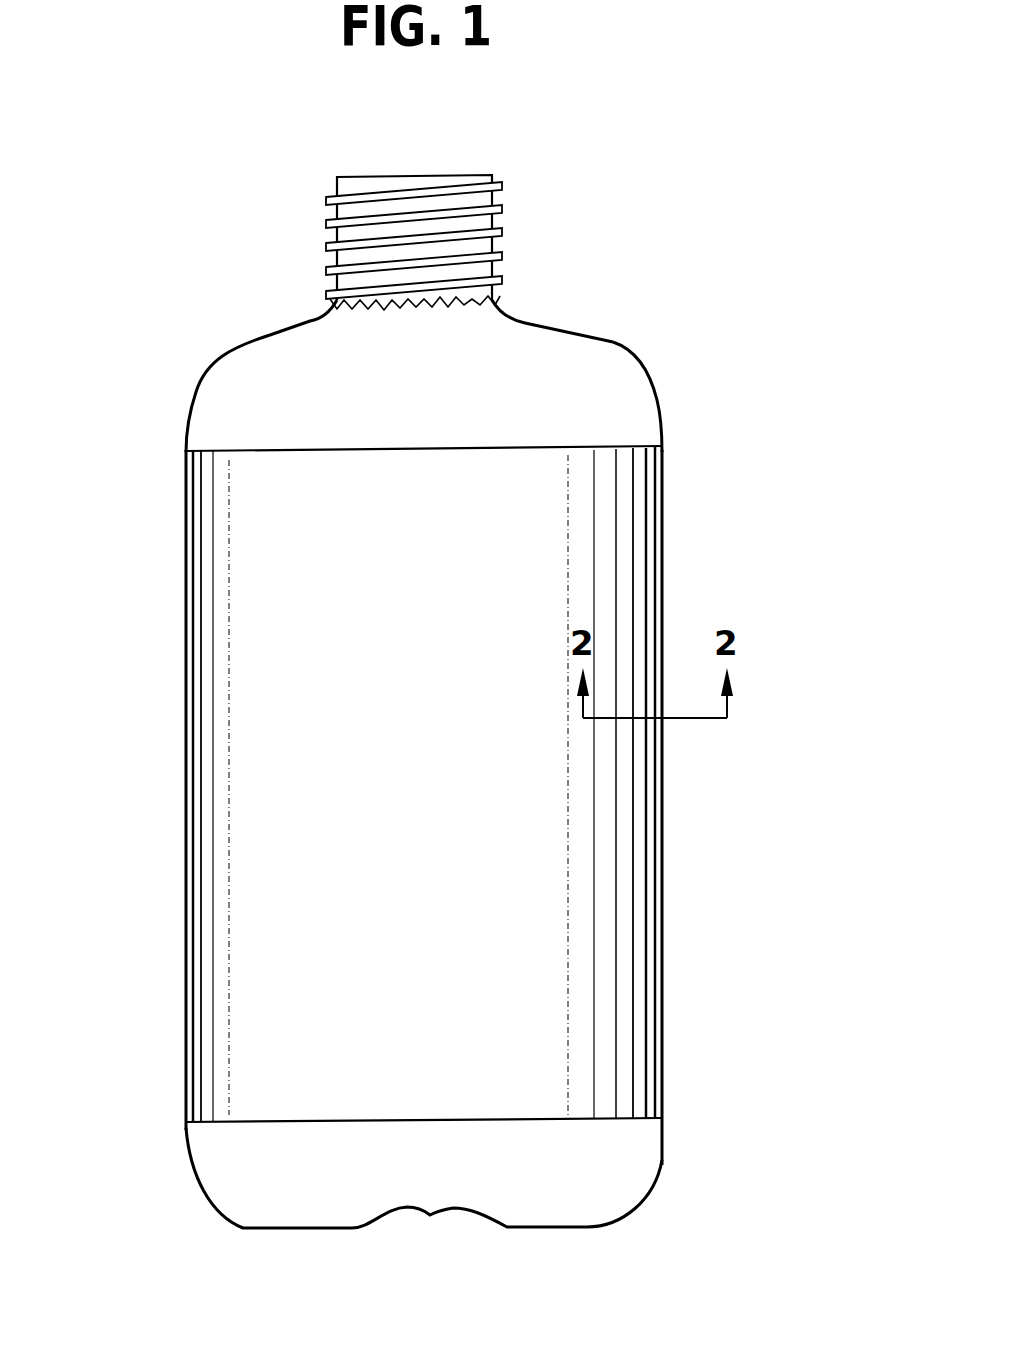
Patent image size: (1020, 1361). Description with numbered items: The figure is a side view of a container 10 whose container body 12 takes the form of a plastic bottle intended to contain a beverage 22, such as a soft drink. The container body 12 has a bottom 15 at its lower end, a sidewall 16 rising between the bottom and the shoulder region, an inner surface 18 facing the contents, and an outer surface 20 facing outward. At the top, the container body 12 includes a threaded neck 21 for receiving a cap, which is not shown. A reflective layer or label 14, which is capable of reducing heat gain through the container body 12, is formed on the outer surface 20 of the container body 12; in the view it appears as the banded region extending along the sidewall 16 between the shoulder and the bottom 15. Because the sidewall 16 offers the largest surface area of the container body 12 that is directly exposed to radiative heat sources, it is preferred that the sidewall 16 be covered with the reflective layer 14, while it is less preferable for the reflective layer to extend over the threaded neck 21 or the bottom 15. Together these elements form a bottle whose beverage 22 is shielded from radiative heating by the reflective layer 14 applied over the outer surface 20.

The container 10 is at (765, 194).
The container body 12 is at (615, 343).
The reflective layer 14 is at (638, 583).
The bottom 15 is at (218, 1178).
The sidewall 16 is at (642, 913).
The inner surface 18 is at (646, 386).
The outer surface 20 is at (183, 407).
The threaded neck 21 is at (497, 197).
The beverage 22 is at (485, 297).